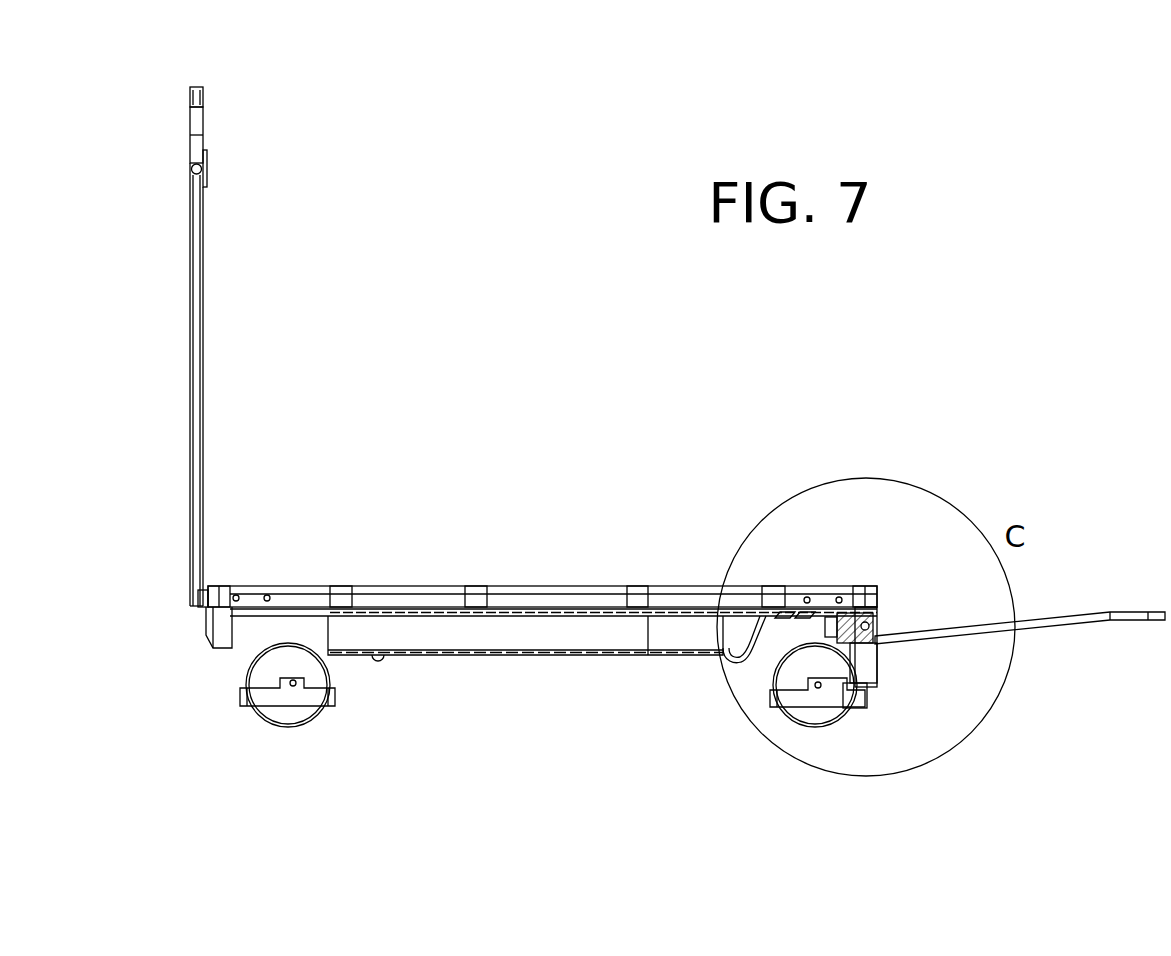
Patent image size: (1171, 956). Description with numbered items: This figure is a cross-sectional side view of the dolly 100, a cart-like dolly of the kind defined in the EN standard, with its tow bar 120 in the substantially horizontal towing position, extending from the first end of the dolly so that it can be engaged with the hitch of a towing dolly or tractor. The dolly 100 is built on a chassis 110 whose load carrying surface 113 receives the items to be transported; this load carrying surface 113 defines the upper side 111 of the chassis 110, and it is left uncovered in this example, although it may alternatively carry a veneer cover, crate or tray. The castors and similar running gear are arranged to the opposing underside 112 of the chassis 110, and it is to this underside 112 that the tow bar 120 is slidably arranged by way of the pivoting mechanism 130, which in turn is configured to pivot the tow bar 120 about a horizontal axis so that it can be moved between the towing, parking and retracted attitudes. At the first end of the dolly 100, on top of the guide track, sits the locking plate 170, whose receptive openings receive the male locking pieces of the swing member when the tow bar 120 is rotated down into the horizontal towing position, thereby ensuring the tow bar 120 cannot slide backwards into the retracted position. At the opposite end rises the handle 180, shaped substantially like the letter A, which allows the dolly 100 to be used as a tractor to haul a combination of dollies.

The dolly 100 is at (299, 540).
The chassis 110 is at (694, 590).
The upper side 111 is at (456, 580).
The underside 112 is at (456, 660).
The load carrying surface 113 is at (341, 585).
The tow bar 120 is at (1133, 612).
The pivoting mechanism 130 is at (887, 625).
The locking plate 170 is at (798, 600).
The handle 180 is at (203, 205).